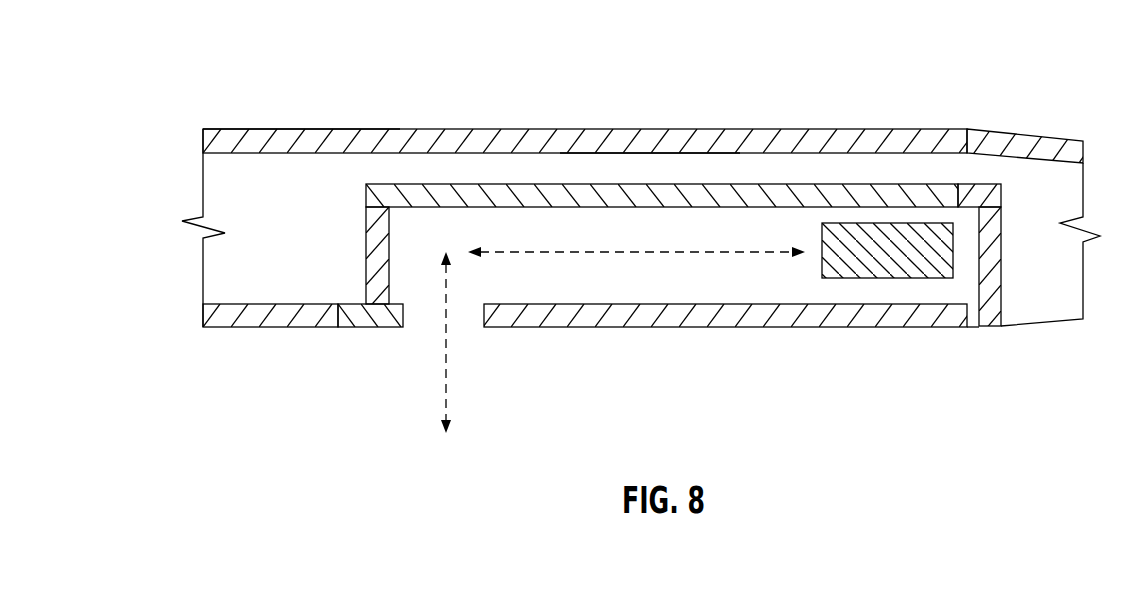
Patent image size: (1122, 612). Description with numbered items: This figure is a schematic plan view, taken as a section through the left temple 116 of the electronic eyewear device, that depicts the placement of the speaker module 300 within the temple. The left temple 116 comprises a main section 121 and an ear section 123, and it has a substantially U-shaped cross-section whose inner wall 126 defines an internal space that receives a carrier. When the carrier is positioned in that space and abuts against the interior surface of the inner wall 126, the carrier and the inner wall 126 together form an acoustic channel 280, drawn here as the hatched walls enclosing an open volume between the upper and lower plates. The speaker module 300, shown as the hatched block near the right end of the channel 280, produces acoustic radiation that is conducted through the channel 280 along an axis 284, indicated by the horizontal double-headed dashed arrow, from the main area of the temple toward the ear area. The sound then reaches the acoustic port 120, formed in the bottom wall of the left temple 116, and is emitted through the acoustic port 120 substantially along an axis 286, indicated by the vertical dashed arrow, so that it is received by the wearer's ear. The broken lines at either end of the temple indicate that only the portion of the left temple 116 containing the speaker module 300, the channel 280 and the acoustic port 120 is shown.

The left temple 116 is at (469, 53).
The main section 121 is at (773, 128).
The ear section 123 is at (250, 129).
The inner wall 126 is at (655, 150).
The acoustic port 120 is at (404, 312).
The acoustic channel 280 is at (753, 278).
The axis 284 is at (688, 255).
The axis 286 is at (447, 360).
The speaker module 300 is at (955, 270).